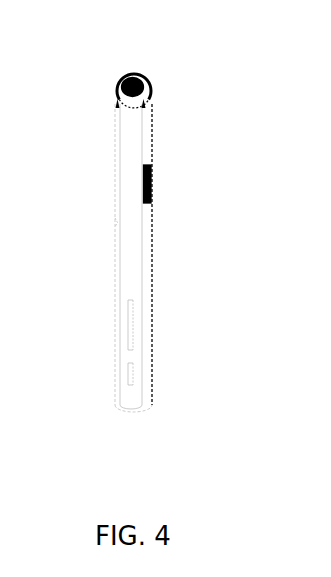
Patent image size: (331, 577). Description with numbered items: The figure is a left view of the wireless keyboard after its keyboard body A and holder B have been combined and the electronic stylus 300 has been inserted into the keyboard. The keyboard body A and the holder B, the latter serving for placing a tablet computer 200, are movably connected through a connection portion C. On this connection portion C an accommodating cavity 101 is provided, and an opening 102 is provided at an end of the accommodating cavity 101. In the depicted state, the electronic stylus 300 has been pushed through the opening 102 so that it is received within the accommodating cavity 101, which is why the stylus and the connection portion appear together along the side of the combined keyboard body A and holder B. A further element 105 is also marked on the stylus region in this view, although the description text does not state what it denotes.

The electronic stylus 300 is at (140, 74).
The opening 102 is at (118, 82).
The accommodating cavity 101 is at (144, 101).
The marker block 105 is at (152, 183).
The tablet computer 200 is at (125, 409).
The keyboard body A is at (152, 253).
The holder B is at (115, 270).
The connection portion C is at (118, 101).